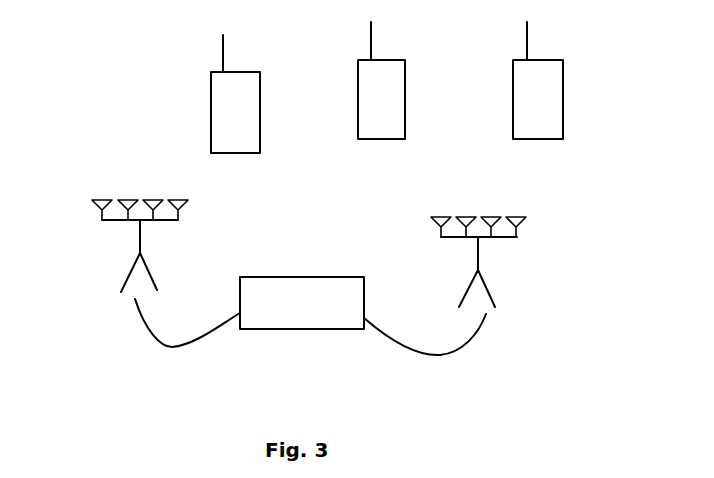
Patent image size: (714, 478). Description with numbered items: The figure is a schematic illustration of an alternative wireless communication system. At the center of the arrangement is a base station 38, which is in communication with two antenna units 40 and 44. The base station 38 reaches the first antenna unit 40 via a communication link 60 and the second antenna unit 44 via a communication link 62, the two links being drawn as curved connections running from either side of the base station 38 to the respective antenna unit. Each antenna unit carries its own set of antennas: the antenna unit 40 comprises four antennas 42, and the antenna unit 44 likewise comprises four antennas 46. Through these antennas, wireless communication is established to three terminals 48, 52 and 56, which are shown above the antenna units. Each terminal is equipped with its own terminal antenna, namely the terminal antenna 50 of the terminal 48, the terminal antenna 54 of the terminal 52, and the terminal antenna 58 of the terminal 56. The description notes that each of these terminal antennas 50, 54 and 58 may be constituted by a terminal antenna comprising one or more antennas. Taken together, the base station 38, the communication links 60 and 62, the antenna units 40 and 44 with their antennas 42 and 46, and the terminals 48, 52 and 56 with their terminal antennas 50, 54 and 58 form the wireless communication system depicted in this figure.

The base station 38 is at (322, 330).
The antenna unit 40 is at (139, 253).
The antennas 42 is at (125, 195).
The antenna unit 44 is at (485, 257).
The antennas 46 is at (482, 213).
The terminal 48 is at (250, 113).
The terminal antenna 50 is at (225, 62).
The terminal 52 is at (398, 99).
The terminal antenna 54 is at (373, 46).
The terminal 56 is at (553, 99).
The terminal antenna 58 is at (529, 46).
The communication link 60 is at (155, 340).
The communication link 62 is at (475, 333).